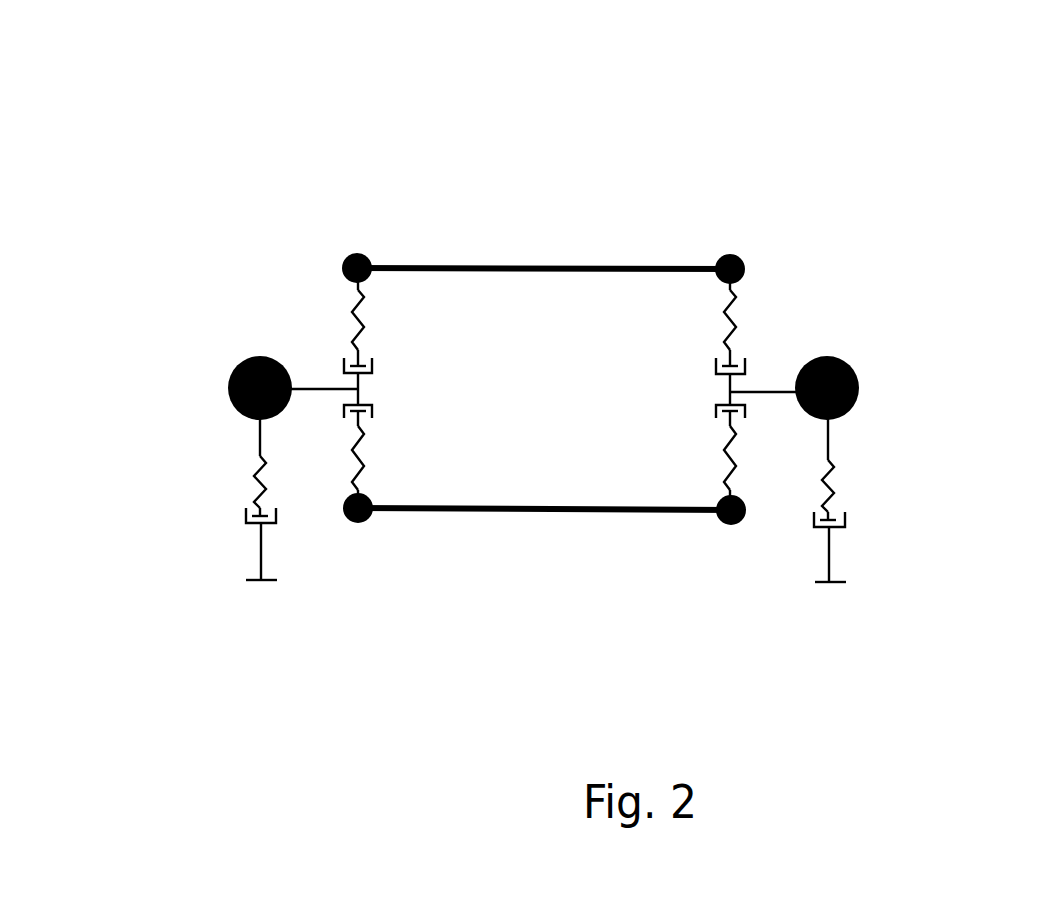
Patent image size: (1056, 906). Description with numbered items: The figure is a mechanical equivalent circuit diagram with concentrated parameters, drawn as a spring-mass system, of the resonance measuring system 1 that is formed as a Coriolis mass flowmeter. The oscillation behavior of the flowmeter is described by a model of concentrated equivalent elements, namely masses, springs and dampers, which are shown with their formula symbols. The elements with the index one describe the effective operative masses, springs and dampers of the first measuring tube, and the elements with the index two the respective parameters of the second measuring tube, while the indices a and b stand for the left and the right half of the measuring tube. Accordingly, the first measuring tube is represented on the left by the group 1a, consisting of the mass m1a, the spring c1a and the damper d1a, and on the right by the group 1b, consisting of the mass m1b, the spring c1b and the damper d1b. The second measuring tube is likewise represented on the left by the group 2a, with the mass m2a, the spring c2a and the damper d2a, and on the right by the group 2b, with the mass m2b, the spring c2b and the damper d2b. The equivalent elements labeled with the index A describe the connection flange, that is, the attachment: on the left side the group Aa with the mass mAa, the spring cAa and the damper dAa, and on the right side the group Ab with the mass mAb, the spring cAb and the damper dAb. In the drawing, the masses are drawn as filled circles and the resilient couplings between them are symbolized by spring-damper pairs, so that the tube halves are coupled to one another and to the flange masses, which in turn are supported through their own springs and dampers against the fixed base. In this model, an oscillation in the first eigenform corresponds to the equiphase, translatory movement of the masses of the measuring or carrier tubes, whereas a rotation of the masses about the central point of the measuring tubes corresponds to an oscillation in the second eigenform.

The resonance measuring system 1 is at (338, 182).
The first measuring tube equivalent elements, left half 1a is at (392, 329).
The second measuring tube equivalent elements, left half 2a is at (394, 460).
The first measuring tube equivalent elements, right half 1b is at (696, 329).
The second measuring tube equivalent elements, right half 2b is at (697, 460).
The connection flange equivalent elements, left half Aa is at (167, 468).
The connection flange equivalent elements, right half Ab is at (919, 469).
The mass of first measuring tube, left half m1a is at (392, 288).
The spring of first measuring tube, left half c1a is at (391, 322).
The damper of first measuring tube, left half d1a is at (387, 374).
The mass of second measuring tube, left half m2a is at (394, 460).
The spring of second measuring tube, left half c2a is at (392, 458).
The damper of second measuring tube, left half d2a is at (388, 452).
The mass of first measuring tube, right half m1b is at (696, 289).
The spring of first measuring tube, right half c1b is at (693, 321).
The damper of first measuring tube, right half d1b is at (696, 374).
The mass of second measuring tube, right half m2b is at (698, 460).
The spring of second measuring tube, right half c2b is at (693, 458).
The damper of second measuring tube, right half d2b is at (696, 453).
The mass of connection flange, left side mAa is at (167, 406).
The spring of connection flange, left side cAa is at (196, 461).
The damper of connection flange, left side dAa is at (238, 497).
The mass of connection flange, right side mAb is at (849, 412).
The spring of connection flange, right side cAb is at (895, 469).
The damper of connection flange, right side dAb is at (928, 504).